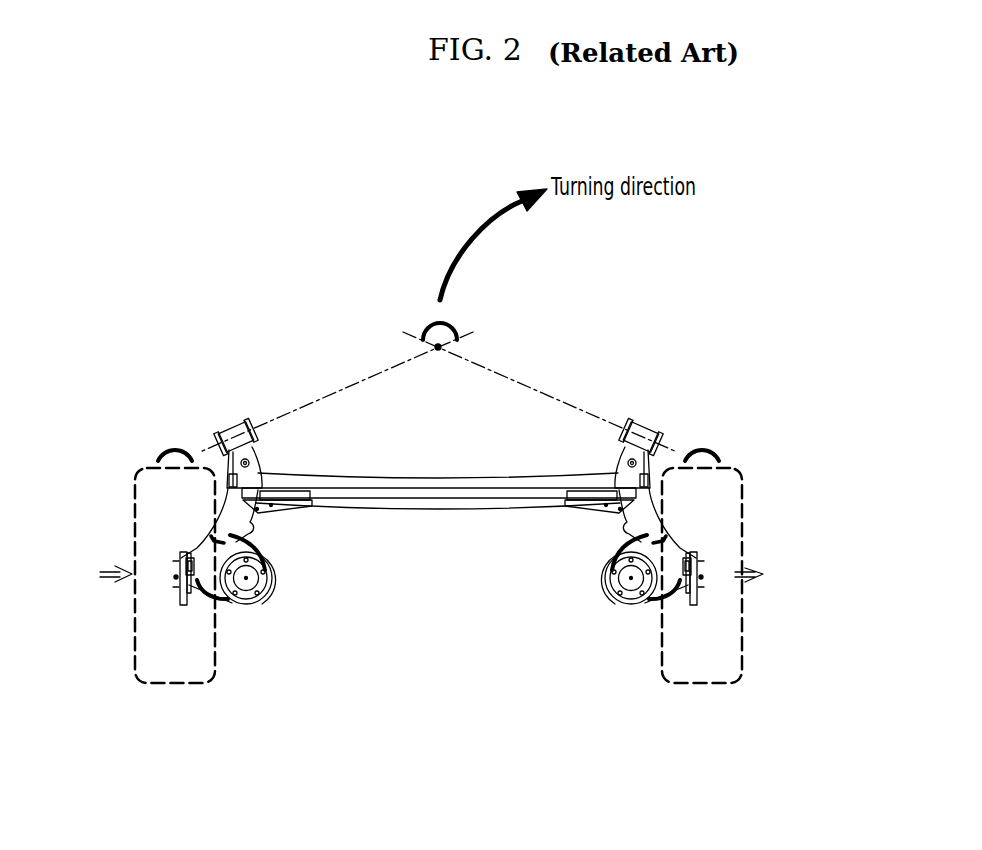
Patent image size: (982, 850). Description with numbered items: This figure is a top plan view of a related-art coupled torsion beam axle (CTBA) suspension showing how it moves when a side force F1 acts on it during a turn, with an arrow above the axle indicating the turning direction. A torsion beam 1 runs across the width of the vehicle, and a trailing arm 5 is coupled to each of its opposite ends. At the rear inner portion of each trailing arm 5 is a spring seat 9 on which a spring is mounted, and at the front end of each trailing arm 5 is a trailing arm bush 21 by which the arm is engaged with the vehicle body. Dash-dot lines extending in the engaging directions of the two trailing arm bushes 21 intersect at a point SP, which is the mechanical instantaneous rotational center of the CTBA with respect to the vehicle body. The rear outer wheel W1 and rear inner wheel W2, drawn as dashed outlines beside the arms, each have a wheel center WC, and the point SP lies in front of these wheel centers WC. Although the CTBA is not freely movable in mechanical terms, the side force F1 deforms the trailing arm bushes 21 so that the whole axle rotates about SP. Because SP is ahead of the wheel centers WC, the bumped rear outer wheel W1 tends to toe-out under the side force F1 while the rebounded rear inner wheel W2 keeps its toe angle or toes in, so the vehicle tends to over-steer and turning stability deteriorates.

The torsion beam 1 is at (437, 512).
The trailing arm bush 21 is at (236, 421).
The trailing arm 5 is at (249, 527).
The spring seat 9 is at (265, 588).
The instantaneous rotational center point SP is at (437, 360).
The wheel center WC is at (170, 583).
The rear outer wheel W1 is at (185, 683).
The rear inner wheel W2 is at (712, 683).
The side force F1 is at (432, 574).